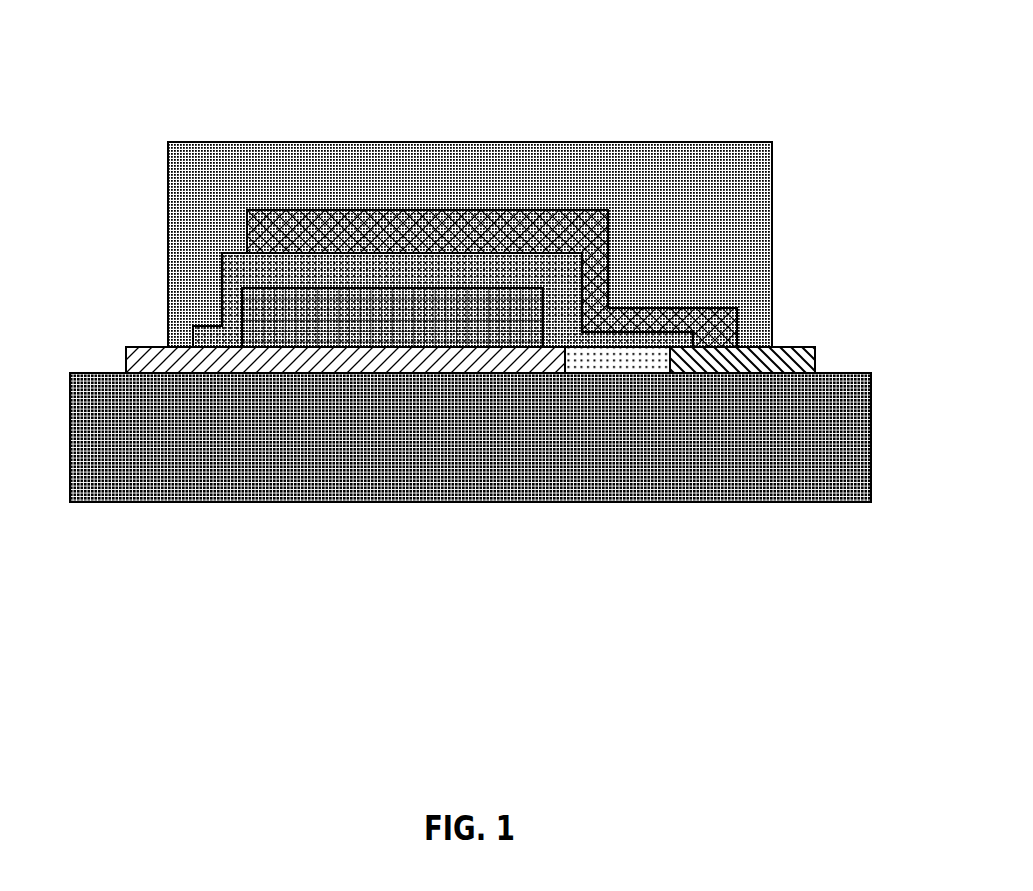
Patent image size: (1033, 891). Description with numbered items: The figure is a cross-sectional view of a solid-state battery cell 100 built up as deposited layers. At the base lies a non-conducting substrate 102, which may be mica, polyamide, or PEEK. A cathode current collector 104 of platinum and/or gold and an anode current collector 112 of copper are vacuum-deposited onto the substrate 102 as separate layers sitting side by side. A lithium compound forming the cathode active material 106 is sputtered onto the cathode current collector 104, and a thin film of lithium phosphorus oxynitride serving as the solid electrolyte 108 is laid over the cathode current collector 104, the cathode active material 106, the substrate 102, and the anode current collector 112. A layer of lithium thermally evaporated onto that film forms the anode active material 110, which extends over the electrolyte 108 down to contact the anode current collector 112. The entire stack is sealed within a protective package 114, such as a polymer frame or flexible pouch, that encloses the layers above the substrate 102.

The battery cell 100 is at (465, 369).
The substrate 102 is at (372, 465).
The cathode current collector 104 is at (303, 360).
The cathode active material 106 is at (337, 330).
The electrolyte 108 is at (237, 268).
The anode active material 110 is at (702, 325).
The anode current collector 112 is at (680, 363).
The protective package 114 is at (550, 175).